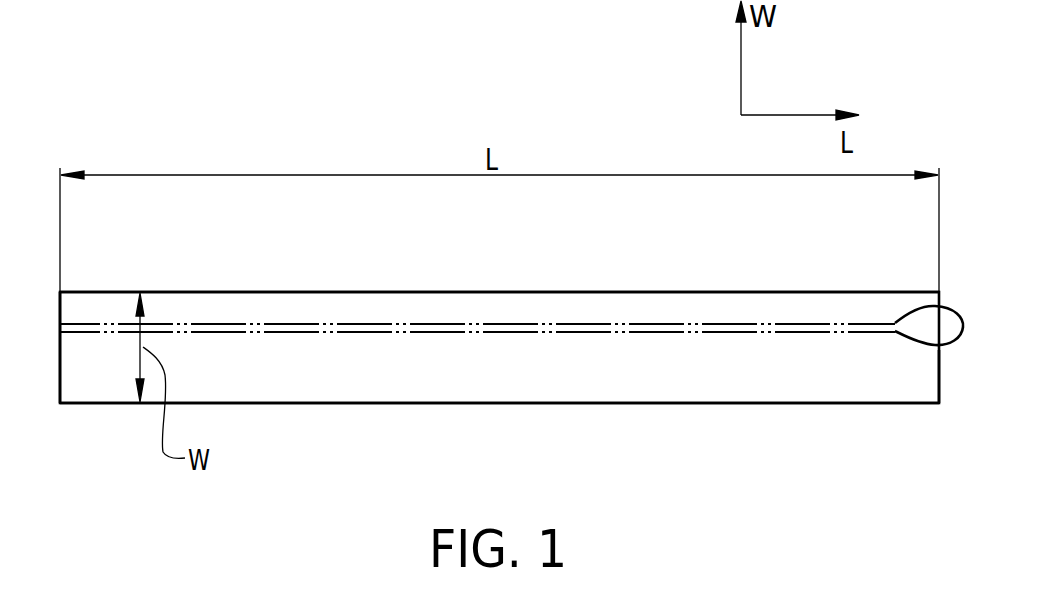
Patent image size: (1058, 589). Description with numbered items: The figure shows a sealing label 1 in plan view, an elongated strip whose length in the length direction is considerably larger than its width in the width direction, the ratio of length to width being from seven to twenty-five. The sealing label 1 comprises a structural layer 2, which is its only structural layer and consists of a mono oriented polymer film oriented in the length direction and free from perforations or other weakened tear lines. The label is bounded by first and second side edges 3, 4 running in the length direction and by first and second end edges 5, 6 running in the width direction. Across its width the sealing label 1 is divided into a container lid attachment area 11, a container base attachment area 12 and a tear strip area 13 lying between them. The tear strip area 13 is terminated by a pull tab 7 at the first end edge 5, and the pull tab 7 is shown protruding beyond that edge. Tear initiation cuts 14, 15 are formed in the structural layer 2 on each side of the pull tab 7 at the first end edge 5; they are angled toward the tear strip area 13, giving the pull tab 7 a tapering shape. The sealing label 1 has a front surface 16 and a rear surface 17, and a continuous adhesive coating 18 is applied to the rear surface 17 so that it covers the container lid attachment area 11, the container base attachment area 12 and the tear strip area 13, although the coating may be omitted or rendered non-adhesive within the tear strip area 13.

The sealing label 1 is at (708, 260).
The structural layer 2 is at (388, 307).
The first side edge 3 is at (582, 272).
The second side edge 4 is at (580, 432).
The first end edge 5 is at (939, 372).
The second end edge 6 is at (60, 372).
The pull tab 7 is at (935, 326).
The container lid attachment area 11 is at (225, 307).
The container base attachment area 12 is at (305, 388).
The tear strip area 13 is at (303, 327).
The tear initiation cut 14 is at (922, 306).
The tear initiation cut 15 is at (920, 345).
The front surface 16 is at (388, 388).
The rear surface 17 is at (468, 388).
The adhesive coating 18 is at (468, 306).